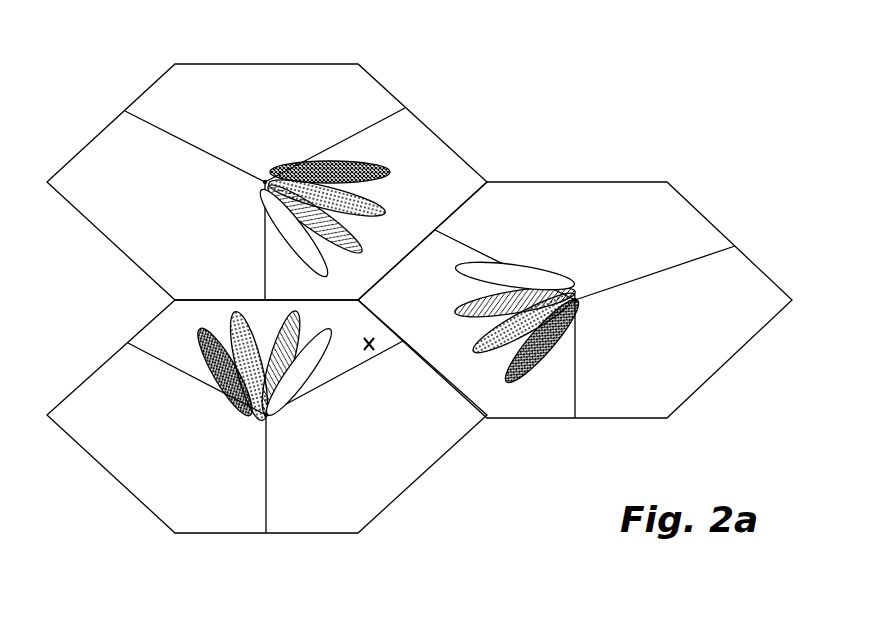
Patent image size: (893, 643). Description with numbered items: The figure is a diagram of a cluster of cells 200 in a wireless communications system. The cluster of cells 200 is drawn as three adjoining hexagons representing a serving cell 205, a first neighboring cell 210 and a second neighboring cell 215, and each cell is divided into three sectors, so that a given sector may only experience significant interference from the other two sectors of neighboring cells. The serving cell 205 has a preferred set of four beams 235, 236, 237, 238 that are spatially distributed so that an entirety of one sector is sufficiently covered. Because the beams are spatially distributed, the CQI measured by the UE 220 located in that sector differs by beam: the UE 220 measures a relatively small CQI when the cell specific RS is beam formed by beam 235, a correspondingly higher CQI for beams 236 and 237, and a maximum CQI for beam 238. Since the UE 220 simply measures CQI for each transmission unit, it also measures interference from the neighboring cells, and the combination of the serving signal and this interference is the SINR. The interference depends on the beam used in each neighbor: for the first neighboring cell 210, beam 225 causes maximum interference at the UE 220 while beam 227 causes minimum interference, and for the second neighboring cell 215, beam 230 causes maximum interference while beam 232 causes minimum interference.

The cluster of cells 200 is at (686, 63).
The cell "0" 205 is at (268, 418).
The cell "1" 210 is at (262, 181).
The cell "2" 215 is at (580, 298).
The UE 220 is at (372, 350).
The beam 225 is at (286, 232).
The beam 227 is at (337, 163).
The beam 230 is at (456, 303).
The beam 232 is at (518, 381).
The beam 235 is at (233, 403).
The beam 236 is at (240, 318).
The beam 237 is at (325, 234).
The beam 238 is at (293, 403).